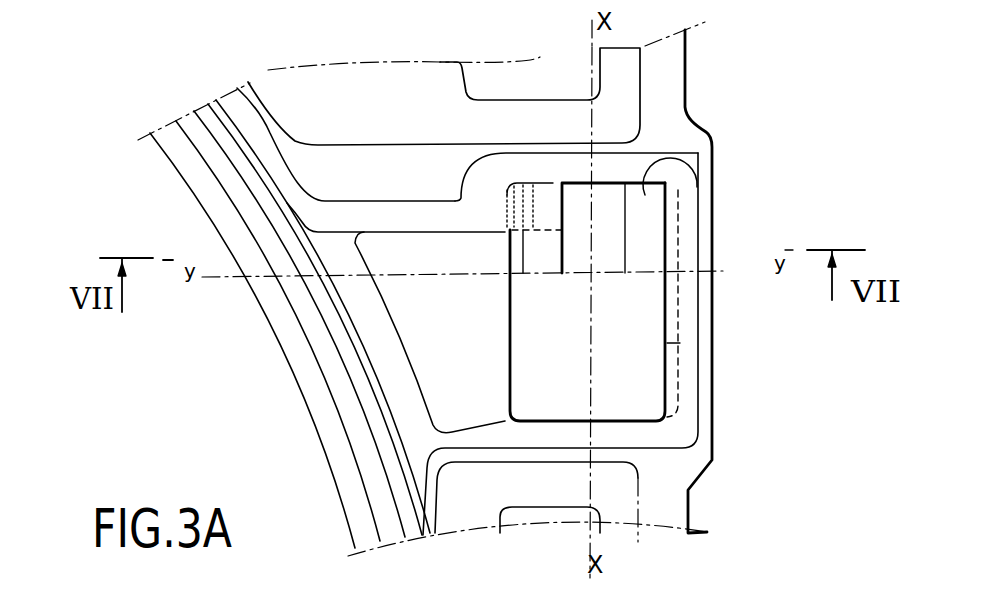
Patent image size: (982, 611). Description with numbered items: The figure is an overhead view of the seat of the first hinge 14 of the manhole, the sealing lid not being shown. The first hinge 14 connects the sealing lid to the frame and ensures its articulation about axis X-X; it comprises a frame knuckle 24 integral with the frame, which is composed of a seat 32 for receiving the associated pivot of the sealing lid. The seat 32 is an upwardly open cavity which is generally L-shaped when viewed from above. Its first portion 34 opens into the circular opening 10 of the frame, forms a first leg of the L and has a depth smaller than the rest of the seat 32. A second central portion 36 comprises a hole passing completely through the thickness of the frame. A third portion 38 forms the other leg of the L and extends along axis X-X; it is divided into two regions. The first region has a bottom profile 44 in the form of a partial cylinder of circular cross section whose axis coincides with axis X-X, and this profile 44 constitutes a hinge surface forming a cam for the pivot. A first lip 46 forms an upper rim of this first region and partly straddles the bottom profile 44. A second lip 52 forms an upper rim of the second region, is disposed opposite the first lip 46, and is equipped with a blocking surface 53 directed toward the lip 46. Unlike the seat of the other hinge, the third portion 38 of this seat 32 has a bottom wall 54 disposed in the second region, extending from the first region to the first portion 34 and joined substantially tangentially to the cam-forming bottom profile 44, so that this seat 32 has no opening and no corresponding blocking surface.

The circular opening 10 is at (208, 412).
The first hinge 14 is at (767, 323).
The frame knuckle 24 is at (790, 167).
The seat 32 is at (622, 365).
The first portion 34 is at (427, 337).
The second central portion 36 is at (647, 395).
The third portion 38 is at (714, 151).
The bottom profile 44 is at (605, 230).
The first lip 46 is at (647, 203).
The second lip 52 is at (537, 247).
The blocking surface 53 is at (562, 200).
The bottom wall 54 is at (578, 257).